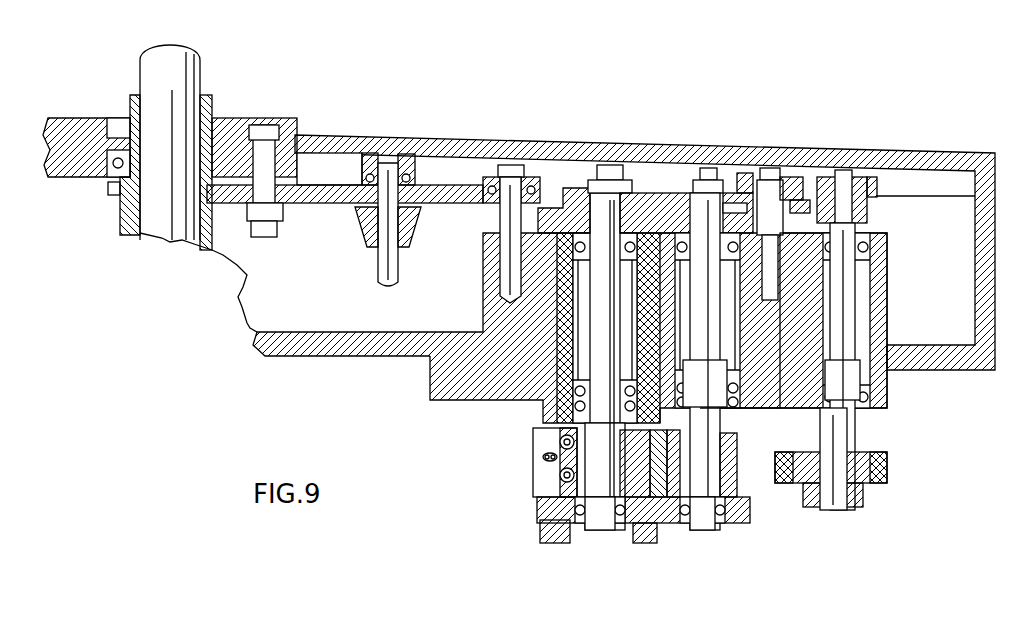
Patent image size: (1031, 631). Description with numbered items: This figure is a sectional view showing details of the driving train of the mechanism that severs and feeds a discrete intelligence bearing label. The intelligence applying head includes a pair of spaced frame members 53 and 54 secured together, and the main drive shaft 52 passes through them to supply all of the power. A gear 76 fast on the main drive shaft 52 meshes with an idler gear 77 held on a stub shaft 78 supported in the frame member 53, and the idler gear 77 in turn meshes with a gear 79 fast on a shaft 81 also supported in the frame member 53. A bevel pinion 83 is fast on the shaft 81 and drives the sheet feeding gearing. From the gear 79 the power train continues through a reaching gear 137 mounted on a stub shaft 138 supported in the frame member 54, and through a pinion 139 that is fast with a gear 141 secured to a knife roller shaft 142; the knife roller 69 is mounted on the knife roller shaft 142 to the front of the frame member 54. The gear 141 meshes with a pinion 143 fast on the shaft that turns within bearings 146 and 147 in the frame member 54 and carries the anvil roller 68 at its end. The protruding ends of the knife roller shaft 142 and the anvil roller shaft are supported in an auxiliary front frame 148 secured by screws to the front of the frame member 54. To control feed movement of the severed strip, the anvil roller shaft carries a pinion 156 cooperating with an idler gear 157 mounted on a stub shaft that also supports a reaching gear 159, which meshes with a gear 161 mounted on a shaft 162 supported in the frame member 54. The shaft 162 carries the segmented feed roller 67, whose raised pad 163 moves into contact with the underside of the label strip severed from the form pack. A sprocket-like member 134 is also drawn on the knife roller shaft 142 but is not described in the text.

The main drive shaft 52 is at (190, 74).
The frame member 53 is at (500, 146).
The frame member 54 is at (390, 348).
The segmented feed roller 67 is at (788, 485).
The anvil roller 68 is at (733, 478).
The knife roller 69 is at (633, 527).
The gear 76 is at (117, 197).
The idler gear 77 is at (217, 197).
The stub shaft 78 is at (300, 158).
The gear 79 is at (333, 200).
The shaft 81 is at (388, 168).
The bevel pinion 83 is at (360, 240).
The sprocket 134 is at (537, 483).
The reaching gear 137 is at (567, 190).
The stub shaft 138 is at (503, 268).
The pinion 139 is at (580, 190).
The gear 141 is at (630, 193).
The knife roller shaft 142 is at (600, 355).
The pinion 143 is at (673, 210).
The bearing 146 is at (727, 277).
The bearing 147 is at (750, 400).
The auxiliary front frame 148 is at (537, 510).
The pinion 156 is at (727, 200).
The idler gear 157 is at (832, 181).
The reaching gear 159 is at (793, 177).
The gear 161 is at (870, 183).
The shaft 162 is at (850, 292).
The raised pad 163 is at (775, 472).